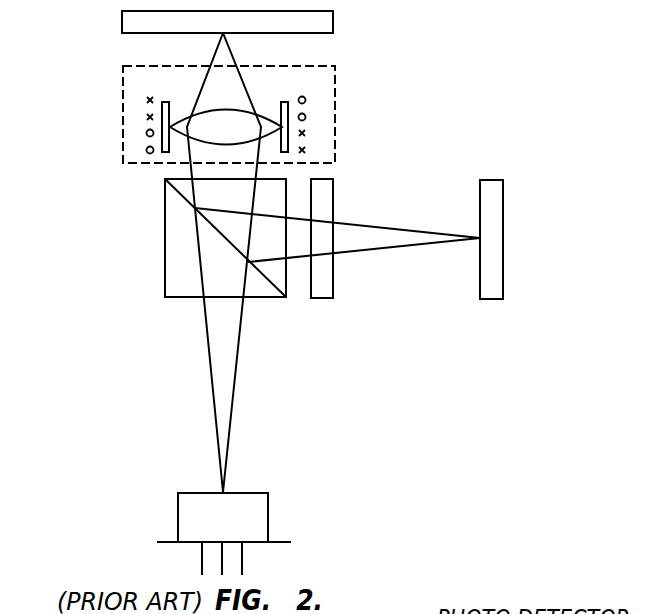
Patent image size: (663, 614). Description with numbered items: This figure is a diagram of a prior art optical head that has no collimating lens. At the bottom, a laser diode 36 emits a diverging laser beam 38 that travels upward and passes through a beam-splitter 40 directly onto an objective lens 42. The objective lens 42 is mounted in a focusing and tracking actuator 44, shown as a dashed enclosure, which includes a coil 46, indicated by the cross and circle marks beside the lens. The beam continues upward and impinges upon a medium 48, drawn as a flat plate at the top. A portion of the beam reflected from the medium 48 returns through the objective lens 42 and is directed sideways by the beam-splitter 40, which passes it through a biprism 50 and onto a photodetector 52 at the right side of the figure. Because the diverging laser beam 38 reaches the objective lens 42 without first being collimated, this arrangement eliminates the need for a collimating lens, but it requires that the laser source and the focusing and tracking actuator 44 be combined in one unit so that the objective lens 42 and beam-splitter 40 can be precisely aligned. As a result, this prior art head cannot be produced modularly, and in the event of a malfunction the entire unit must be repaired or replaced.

The laser diode 36 is at (268, 504).
The laser beam 38 is at (232, 406).
The beam-splitter 40 is at (165, 274).
The objective lens 42 is at (278, 102).
The focusing and tracking actuator 44 is at (335, 108).
The coil 46 is at (153, 97).
The medium 48 is at (333, 16).
The biprism 50 is at (333, 196).
The photodetector 52 is at (503, 196).